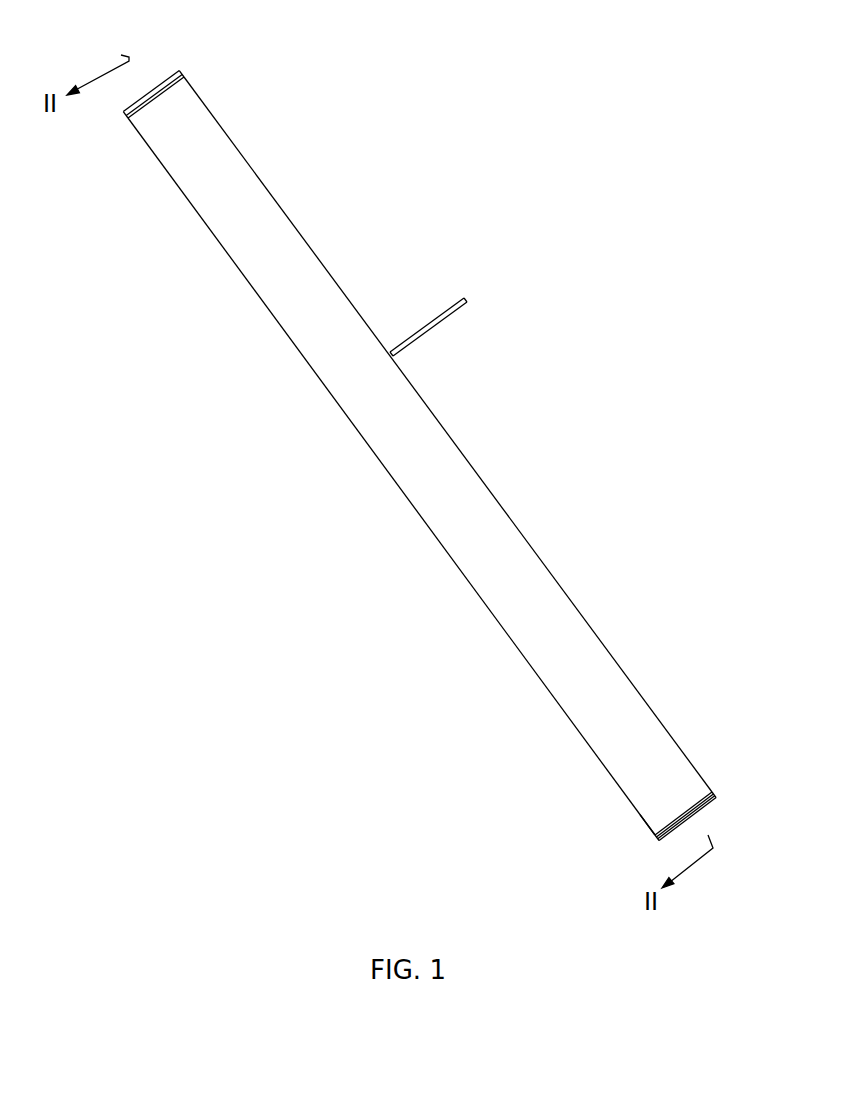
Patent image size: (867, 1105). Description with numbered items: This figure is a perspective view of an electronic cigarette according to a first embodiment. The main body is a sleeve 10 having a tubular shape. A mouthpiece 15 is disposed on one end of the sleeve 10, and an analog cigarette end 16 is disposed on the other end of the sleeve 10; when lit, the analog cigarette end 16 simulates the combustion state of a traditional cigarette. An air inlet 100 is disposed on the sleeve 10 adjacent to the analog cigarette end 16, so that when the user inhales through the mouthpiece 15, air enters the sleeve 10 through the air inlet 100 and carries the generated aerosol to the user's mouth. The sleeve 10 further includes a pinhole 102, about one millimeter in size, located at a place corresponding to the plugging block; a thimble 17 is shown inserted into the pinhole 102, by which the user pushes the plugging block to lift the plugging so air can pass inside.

The sleeve 10 is at (300, 249).
The mouthpiece 15 is at (150, 82).
The analog cigarette end 16 is at (698, 822).
The air inlet 100 is at (672, 824).
The pinhole 102 is at (390, 352).
The thimble 17 is at (441, 324).